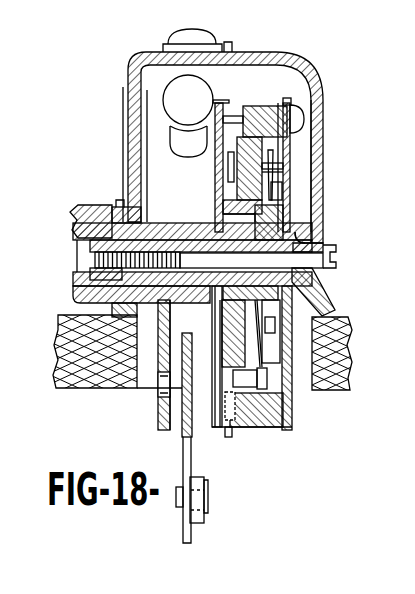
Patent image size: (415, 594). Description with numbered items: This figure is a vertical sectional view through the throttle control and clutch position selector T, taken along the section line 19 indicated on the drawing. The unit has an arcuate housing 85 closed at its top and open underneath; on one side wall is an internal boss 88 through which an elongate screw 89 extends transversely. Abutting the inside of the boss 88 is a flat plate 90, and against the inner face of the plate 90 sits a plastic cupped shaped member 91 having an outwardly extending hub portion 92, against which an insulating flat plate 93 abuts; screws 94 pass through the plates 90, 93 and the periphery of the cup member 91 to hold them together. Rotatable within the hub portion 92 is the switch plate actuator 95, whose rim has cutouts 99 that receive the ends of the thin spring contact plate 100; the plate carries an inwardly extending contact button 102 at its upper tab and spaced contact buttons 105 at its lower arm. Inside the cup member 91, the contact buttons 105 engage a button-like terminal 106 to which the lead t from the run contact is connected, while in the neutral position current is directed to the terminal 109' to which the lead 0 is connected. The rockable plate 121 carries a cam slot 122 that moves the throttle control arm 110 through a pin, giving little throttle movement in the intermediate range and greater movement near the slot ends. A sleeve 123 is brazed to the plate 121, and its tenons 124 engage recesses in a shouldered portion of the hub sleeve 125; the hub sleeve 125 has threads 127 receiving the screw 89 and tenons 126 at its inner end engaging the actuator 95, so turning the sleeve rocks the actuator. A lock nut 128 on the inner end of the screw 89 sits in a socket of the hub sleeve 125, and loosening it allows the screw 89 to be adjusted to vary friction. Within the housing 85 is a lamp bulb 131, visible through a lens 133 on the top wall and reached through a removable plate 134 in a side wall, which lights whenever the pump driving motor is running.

The lens 133 is at (193, 34).
The lamp bulb 131 is at (177, 90).
The removable plate 134 is at (125, 106).
The flat plate 93 is at (226, 108).
The cupped shaped member 91 is at (263, 106).
The section line 19- 19 is at (287, 70).
The screws 94 is at (296, 115).
The flat plate 90 is at (285, 146).
The contact button 102 is at (284, 168).
The cutouts 99 is at (271, 182).
The terminal 109' is at (337, 171).
The arcuate housing 85 is at (276, 192).
The spring contact plate 100 is at (284, 214).
The internal boss 88 is at (308, 240).
The elongate screw 89 is at (316, 262).
The tenons 126 is at (315, 288).
The switch plate actuator 95 is at (312, 306).
The contact buttons 105 is at (287, 392).
The button-like terminal 106 is at (289, 413).
The lead t is at (238, 432).
The throttle control arm 110 is at (190, 462).
The rockable plate 121 is at (158, 424).
The cam slot 122 is at (158, 393).
The hub sleeve 125 is at (103, 223).
The tenons 124 is at (145, 222).
The hub portion 92 is at (223, 201).
The sleeve 123 is at (222, 212).
The lock nut 128 is at (95, 264).
The threads 127 is at (110, 292).
The lead O 0 is at (226, 158).
The throttle control and clutch position selector T is at (316, 60).